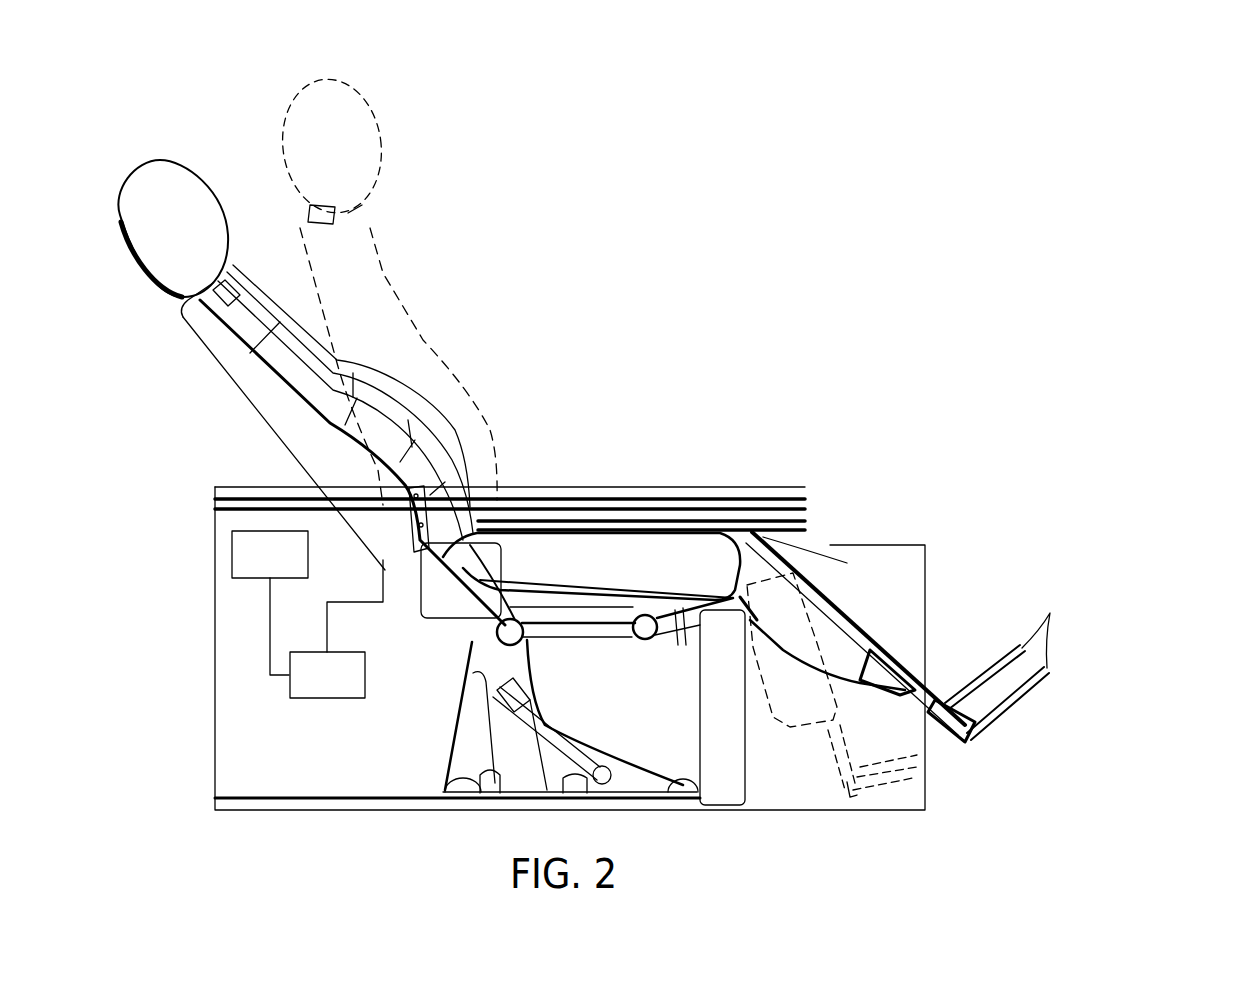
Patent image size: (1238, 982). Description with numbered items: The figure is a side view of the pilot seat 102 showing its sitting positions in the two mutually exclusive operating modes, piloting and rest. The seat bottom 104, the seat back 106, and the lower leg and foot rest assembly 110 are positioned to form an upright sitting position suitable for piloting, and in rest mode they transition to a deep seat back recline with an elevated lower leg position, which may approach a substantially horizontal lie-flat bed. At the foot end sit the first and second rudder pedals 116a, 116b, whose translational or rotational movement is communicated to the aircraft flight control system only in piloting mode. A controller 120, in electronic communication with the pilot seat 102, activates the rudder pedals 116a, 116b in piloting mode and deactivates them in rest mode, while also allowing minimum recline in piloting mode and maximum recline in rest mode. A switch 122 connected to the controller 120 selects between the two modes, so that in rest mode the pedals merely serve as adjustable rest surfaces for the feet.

The pilot seat 102 is at (177, 163).
The seat bottom 104 is at (660, 543).
The seat back 106 is at (372, 308).
The lower leg and foot rest assembly 110 is at (800, 673).
The first rudder pedal 116a is at (1067, 648).
The second rudder pedal 116b is at (1008, 703).
The controller 120 is at (347, 689).
The switch 122 is at (290, 569).